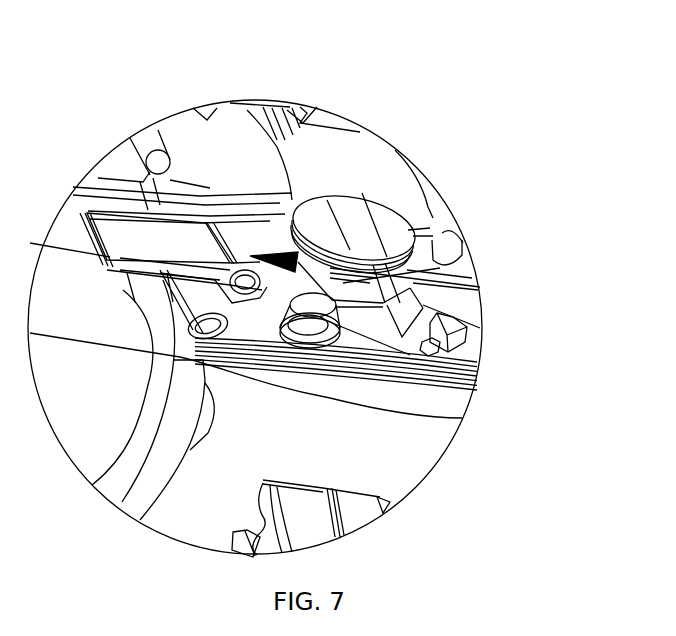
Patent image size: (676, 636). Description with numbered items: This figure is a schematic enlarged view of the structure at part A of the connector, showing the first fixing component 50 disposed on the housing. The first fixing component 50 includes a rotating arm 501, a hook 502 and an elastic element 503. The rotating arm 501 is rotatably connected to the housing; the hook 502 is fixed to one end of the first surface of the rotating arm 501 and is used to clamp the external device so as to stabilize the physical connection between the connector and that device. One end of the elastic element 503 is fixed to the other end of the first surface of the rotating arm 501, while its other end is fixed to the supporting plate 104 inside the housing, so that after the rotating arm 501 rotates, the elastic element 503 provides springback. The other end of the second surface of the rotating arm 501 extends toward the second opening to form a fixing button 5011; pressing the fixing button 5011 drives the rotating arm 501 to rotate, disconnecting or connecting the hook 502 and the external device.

The supporting plate 104 is at (243, 157).
The fixing button 5011 is at (358, 233).
The part A is at (463, 243).
The rotating arm 501 is at (410, 280).
The elastic element 503 is at (477, 388).
The hook 502 is at (462, 418).
The first fixing component 50 is at (557, 358).